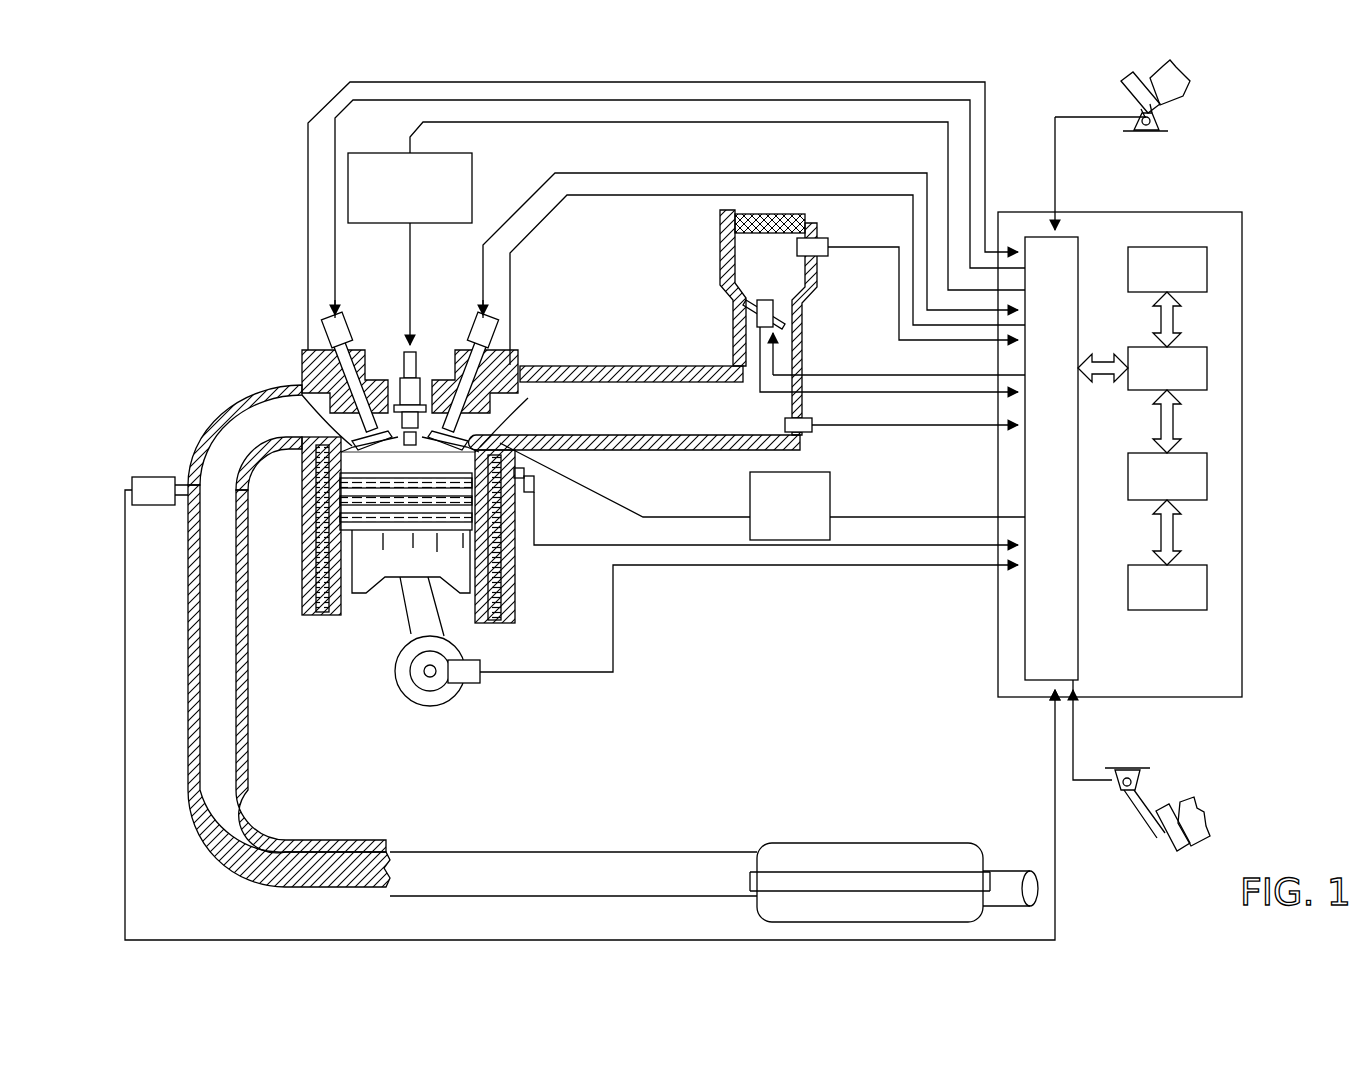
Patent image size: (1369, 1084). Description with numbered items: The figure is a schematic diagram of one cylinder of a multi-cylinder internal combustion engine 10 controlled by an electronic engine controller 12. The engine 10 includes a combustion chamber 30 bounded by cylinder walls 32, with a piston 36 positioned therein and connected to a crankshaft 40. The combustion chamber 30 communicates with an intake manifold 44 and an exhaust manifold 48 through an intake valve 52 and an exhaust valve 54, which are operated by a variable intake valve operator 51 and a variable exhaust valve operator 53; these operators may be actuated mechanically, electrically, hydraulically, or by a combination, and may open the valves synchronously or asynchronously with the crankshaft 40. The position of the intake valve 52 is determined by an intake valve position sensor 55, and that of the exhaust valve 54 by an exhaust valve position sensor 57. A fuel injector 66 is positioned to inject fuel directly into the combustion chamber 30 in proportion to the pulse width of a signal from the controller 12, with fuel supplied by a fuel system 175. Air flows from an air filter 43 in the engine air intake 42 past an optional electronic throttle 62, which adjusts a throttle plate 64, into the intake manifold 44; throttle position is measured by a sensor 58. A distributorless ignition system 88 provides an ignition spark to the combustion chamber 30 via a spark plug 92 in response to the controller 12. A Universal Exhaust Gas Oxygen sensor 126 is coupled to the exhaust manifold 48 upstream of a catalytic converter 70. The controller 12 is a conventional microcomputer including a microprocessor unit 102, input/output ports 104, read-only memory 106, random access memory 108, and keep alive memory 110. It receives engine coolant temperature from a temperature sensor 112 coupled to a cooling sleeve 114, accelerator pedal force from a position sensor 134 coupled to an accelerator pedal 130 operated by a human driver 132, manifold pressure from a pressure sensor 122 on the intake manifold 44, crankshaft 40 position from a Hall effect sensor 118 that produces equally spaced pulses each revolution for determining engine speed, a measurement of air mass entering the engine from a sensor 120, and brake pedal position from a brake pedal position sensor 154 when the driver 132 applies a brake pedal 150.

The internal combustion engine 10 is at (230, 298).
The electronic engine controller 12 is at (1161, 438).
The combustion chamber 30 is at (403, 455).
The cylinder walls 32 is at (345, 612).
The piston 36 is at (392, 565).
The crankshaft 40 is at (425, 692).
The air intake 42 is at (780, 274).
The air filter 43 is at (736, 212).
The intake manifold 44 is at (612, 418).
The exhaust manifold 48 is at (278, 430).
The variable intake valve operator 51 is at (478, 320).
The intake valve 52 is at (470, 425).
The variable exhaust valve operator 53 is at (342, 320).
The exhaust valve 54 is at (345, 402).
The intake valve position sensor 55 is at (492, 338).
The exhaust valve position sensor 57 is at (323, 340).
The throttle position sensor 58 is at (745, 333).
The electronic throttle 62 is at (785, 308).
The throttle plate 64 is at (748, 308).
The fuel injector 66 is at (520, 452).
The catalytic converter 70 is at (800, 845).
The distributorless ignition system 88 is at (358, 155).
The spark plug 92 is at (414, 342).
The microprocessor unit 102 is at (1207, 370).
The input/output ports 104 is at (1080, 244).
The read-only memory 106 is at (1207, 265).
The random access memory 108 is at (1207, 478).
The keep alive memory 110 is at (1207, 588).
The temperature sensor 112 is at (532, 485).
The cooling sleeve 114 is at (505, 572).
The Hall effect sensor 118 is at (478, 662).
The air mass sensor 120 is at (827, 242).
The pressure sensor 122 is at (812, 433).
The Universal Exhaust Gas Oxygen sensor 126 is at (132, 482).
The accelerator pedal 130 is at (1123, 90).
The human driver 132 is at (1190, 82).
The position sensor 134 is at (1152, 119).
The brake pedal 150 is at (1153, 832).
The brake pedal position sensor 154 is at (1115, 780).
The fuel system 175 is at (808, 518).